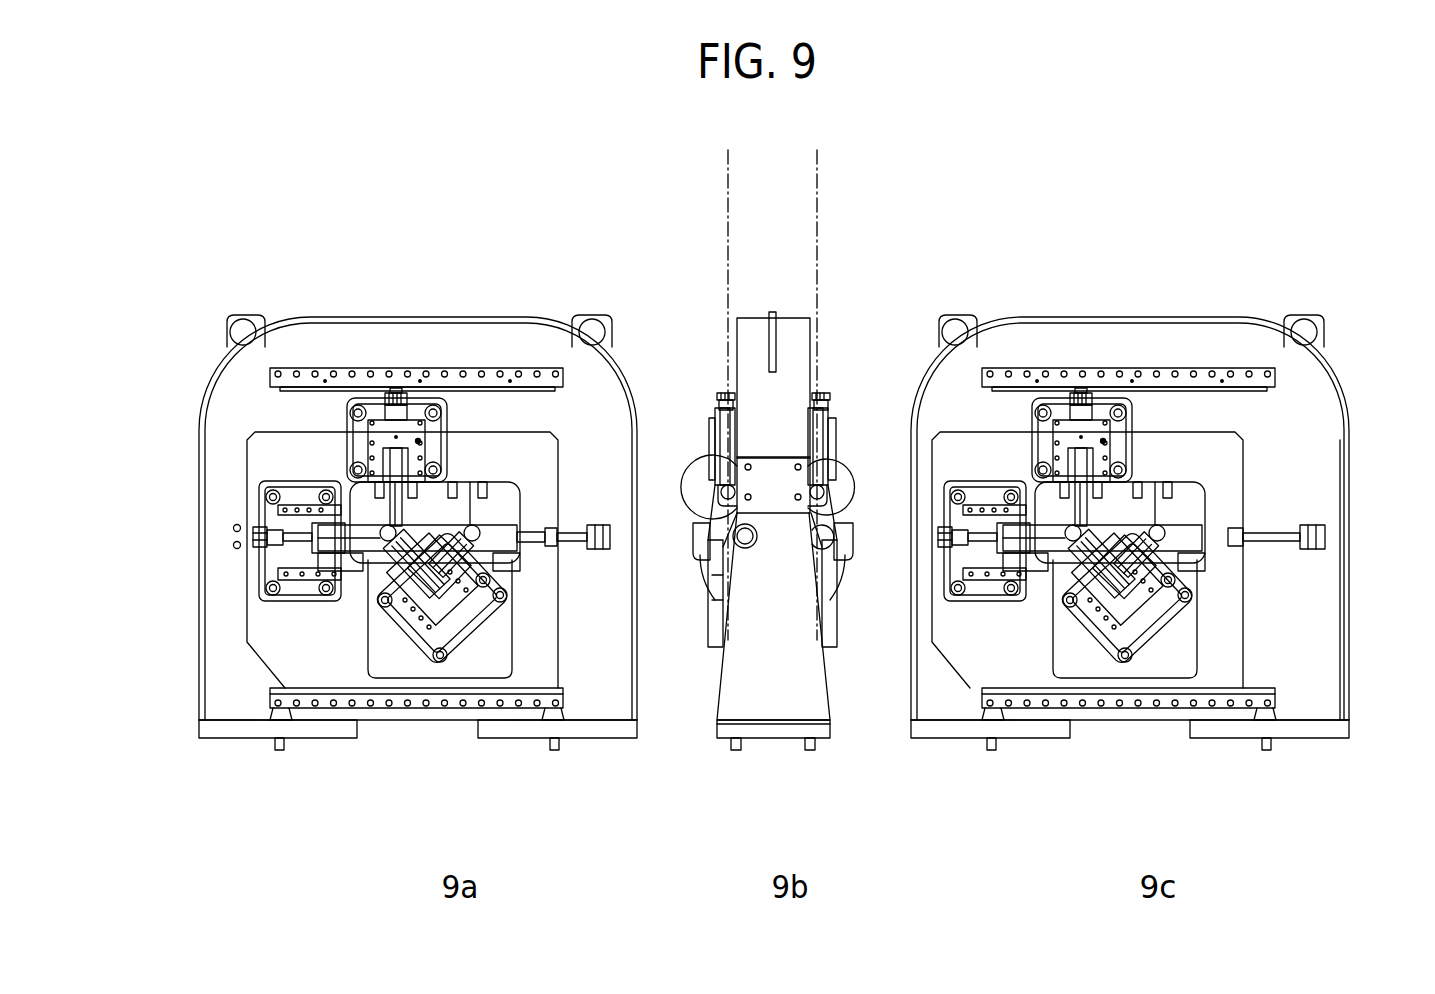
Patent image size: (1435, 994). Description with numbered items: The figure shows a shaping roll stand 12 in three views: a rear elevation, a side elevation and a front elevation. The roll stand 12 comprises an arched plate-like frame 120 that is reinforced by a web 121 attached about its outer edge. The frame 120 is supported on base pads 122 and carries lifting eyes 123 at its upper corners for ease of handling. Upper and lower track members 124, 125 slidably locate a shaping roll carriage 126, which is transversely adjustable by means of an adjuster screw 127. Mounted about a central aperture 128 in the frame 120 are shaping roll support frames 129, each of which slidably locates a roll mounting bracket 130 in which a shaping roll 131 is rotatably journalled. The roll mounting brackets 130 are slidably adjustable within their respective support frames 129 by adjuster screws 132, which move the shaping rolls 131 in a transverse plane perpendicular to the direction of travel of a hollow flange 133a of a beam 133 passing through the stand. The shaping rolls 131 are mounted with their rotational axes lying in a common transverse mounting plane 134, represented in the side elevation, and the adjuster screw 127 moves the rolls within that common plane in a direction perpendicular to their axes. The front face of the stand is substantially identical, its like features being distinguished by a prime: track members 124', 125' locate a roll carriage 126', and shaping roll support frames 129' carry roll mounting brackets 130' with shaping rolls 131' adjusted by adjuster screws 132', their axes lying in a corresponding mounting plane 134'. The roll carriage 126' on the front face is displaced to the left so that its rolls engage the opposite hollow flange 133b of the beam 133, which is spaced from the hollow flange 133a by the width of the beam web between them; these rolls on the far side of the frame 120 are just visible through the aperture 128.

The shaping roll stand 12 is at (461, 245).
The arched plate-like frame 120 is at (363, 343).
The web 121 is at (762, 692).
The base pads 122 is at (250, 735).
The lifting eyes 123 is at (583, 317).
The track member 124 is at (387, 305).
The track member 124' is at (1101, 305).
The track member 125 is at (417, 760).
The track member 125' is at (1129, 760).
The shaping roll carriage 126 is at (335, 560).
The shaping roll carriage 126' is at (1180, 560).
The adjuster screw 127 is at (601, 545).
The central aperture 128 is at (1208, 492).
The shaping roll support frame 129 is at (226, 466).
The shaping roll support frame 129' is at (1186, 466).
The roll mounting bracket 130 is at (332, 395).
The roll mounting bracket 130' is at (1139, 359).
The shaping roll 131 is at (434, 433).
The shaping roll 131' is at (1066, 433).
The adjuster screw 132 is at (423, 383).
The adjuster screw 132' is at (966, 383).
The beam 133 is at (466, 528).
The hollow flange 133a is at (385, 540).
The hollow flange 133b is at (492, 556).
The common transverse mounting plane 134 is at (690, 380).
The common transverse mounting plane 134' is at (851, 380).